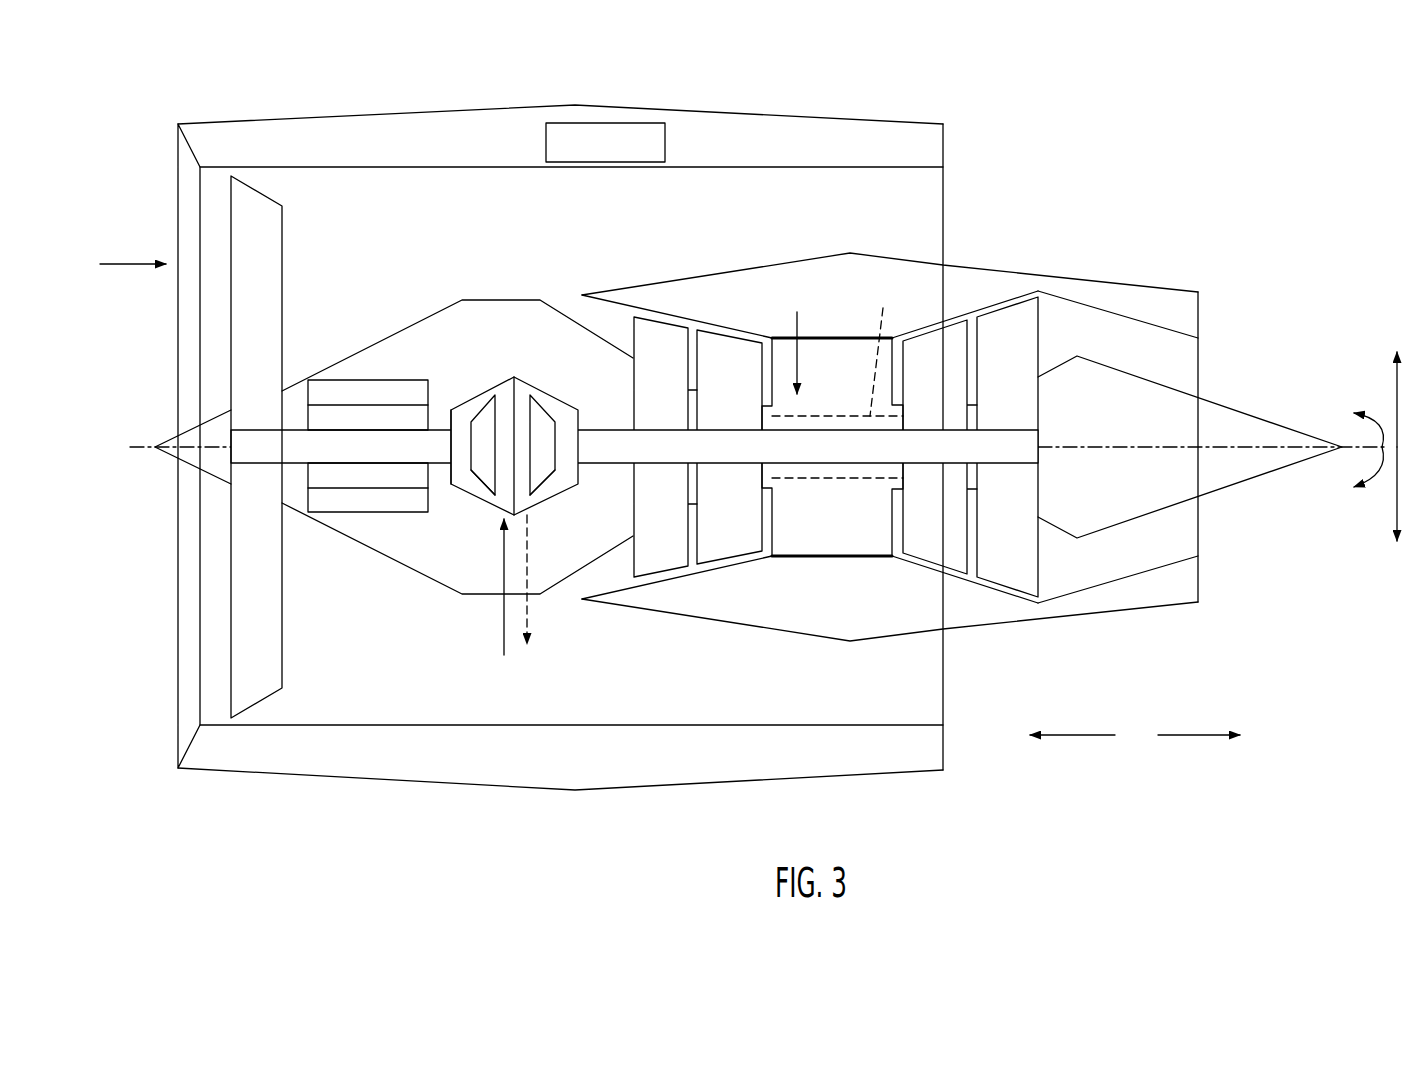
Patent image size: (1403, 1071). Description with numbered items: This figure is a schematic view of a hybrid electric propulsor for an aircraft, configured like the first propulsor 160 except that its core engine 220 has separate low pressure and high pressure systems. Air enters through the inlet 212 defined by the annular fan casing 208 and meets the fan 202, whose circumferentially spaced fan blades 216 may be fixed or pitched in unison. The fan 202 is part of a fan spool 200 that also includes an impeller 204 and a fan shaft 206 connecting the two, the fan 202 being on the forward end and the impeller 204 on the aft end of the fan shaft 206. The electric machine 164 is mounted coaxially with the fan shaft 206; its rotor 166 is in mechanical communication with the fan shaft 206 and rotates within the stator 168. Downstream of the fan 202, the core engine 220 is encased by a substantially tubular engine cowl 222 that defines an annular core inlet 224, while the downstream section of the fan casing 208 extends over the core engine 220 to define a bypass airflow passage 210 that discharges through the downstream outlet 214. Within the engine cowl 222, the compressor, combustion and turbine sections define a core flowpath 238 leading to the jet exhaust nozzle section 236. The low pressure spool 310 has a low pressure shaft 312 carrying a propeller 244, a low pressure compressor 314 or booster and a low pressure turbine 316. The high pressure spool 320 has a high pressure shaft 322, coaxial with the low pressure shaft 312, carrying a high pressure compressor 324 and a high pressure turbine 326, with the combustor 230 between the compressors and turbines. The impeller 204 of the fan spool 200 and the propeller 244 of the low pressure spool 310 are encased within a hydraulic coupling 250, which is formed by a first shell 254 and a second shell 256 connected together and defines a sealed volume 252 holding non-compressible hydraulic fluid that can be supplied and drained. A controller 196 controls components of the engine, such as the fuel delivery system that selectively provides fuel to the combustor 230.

The first propulsor 160 is at (250, 106).
The electric machine 164 is at (352, 518).
The rotor 166 is at (338, 415).
The stator 168 is at (367, 513).
The controller 196 is at (587, 157).
The fan spool 200 is at (438, 412).
The fan 202 is at (304, 657).
The impeller 204 is at (483, 484).
The fan shaft 206 is at (445, 466).
The fan casing 208 is at (420, 157).
The bypass airflow passage 210 is at (779, 700).
The inlet 212 is at (192, 612).
The downstream outlet 214 is at (952, 201).
The fan blades 216 is at (284, 256).
The core engine 220 is at (763, 300).
The engine cowl 222 is at (695, 278).
The annular core inlet 224 is at (572, 303).
The combustor 230 is at (814, 405).
The jet exhaust nozzle section 236 is at (1213, 344).
The core flowpath 238 is at (1069, 322).
The propeller 244 is at (541, 487).
The hydraulic coupling 250 is at (511, 374).
The sealed volume 252 is at (566, 405).
The first shell 254 is at (490, 395).
The second shell 256 is at (545, 392).
The low pressure spool 310 is at (838, 470).
The low pressure shaft 312 is at (600, 463).
The low pressure compressor 314 is at (642, 405).
The low pressure turbine 316 is at (989, 405).
The high pressure spool 320 is at (866, 485).
The high pressure shaft 322 is at (882, 344).
The high pressure compressor 324 is at (710, 405).
The high pressure turbine 326 is at (917, 405).